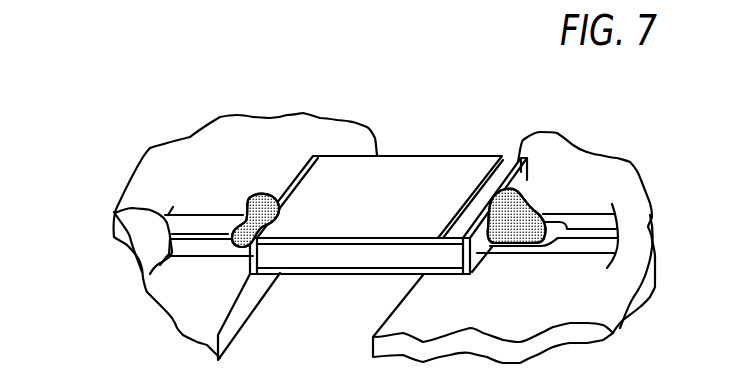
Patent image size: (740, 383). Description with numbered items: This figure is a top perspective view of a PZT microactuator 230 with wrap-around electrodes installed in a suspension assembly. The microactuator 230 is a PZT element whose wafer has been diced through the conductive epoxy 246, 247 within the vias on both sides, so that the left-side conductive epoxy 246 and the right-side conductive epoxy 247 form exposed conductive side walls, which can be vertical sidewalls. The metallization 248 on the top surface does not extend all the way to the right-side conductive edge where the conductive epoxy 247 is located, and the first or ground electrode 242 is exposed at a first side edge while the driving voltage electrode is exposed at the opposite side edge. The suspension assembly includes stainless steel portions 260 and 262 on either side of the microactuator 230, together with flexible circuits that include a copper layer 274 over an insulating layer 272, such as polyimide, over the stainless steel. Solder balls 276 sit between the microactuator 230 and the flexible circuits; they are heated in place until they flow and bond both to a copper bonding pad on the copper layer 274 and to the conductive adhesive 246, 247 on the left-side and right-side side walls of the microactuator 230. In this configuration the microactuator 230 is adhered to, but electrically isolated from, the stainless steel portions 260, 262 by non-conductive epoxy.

The microactuator 230 is at (412, 118).
The ground electrode 242 is at (376, 209).
The conductive epoxy 246 is at (252, 265).
The conductive epoxy 247 is at (525, 178).
The metallization 248 is at (457, 163).
The stainless steel portion 260 is at (545, 315).
The stainless steel portion 262 is at (182, 288).
The insulating layer 272 is at (202, 222).
The copper layer 274 is at (180, 233).
The solder balls 276 is at (256, 198).